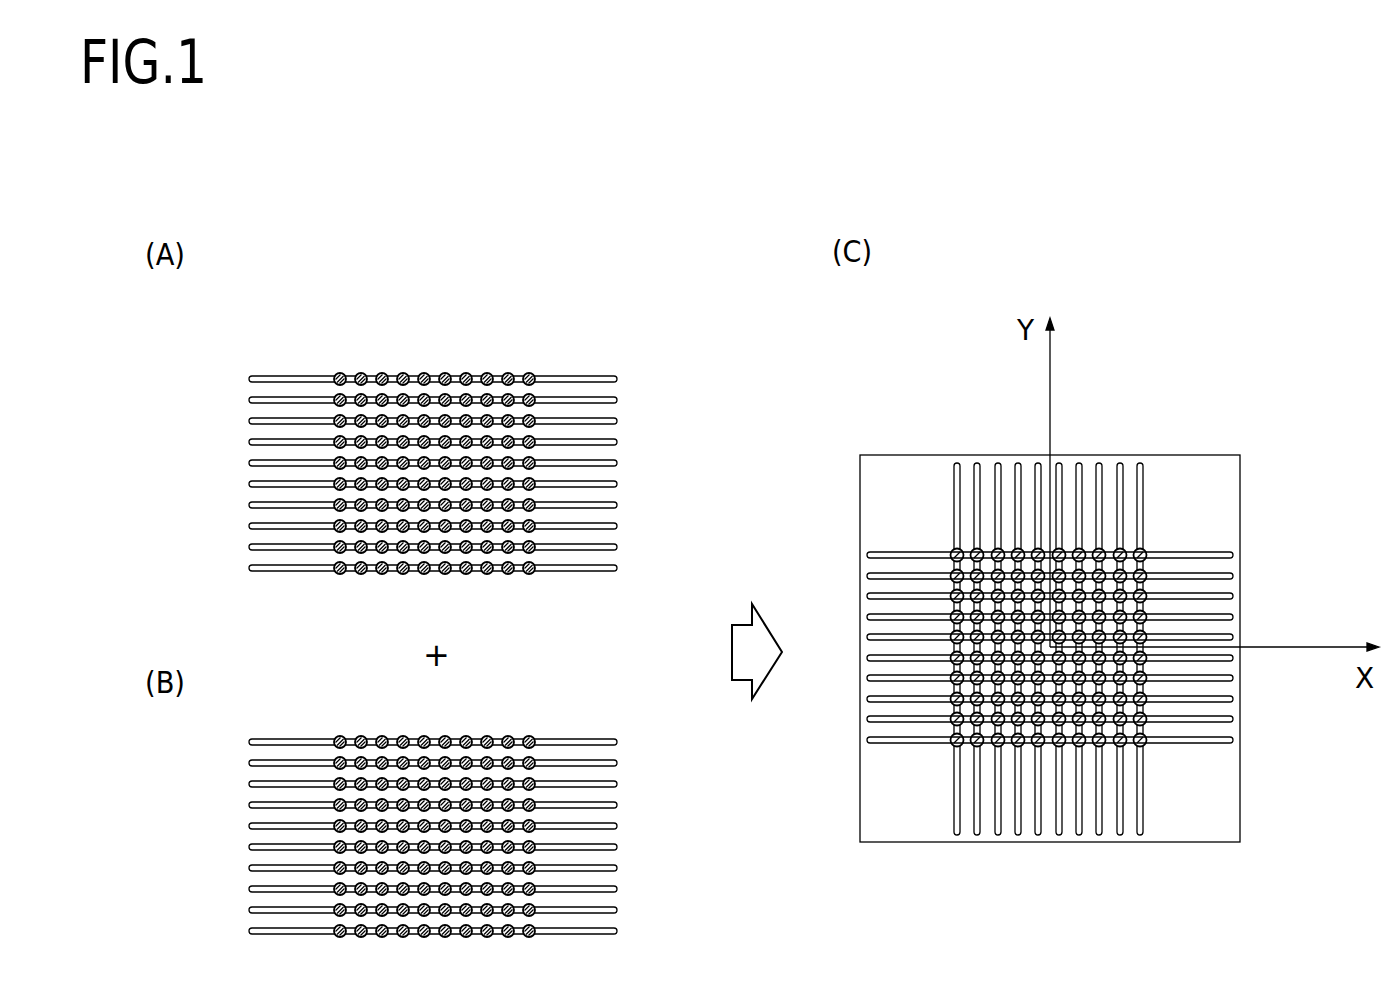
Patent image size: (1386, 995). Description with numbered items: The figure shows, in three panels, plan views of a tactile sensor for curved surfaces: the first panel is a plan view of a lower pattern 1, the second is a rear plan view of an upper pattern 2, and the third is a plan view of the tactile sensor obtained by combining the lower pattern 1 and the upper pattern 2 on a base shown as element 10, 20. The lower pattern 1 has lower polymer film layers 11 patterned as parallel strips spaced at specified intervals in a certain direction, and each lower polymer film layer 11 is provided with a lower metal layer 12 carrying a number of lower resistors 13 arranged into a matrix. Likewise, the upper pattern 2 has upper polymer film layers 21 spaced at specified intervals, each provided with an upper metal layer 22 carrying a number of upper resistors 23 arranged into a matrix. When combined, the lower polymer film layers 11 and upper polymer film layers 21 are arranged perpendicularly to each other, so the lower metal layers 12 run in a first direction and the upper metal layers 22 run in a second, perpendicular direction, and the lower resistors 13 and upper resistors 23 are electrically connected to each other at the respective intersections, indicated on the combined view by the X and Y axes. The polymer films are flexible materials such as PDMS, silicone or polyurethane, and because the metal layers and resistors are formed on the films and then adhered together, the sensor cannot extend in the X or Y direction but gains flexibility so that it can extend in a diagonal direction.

The lower pattern 1 is at (797, 541).
The upper pattern 2 is at (749, 744).
The first base 10 is at (1050, 690).
The second base 20 is at (920, 843).
The lower polymer film layers 11 is at (717, 569).
The lower metal layers 12 is at (594, 376).
The lower resistors 13 is at (505, 373).
The upper polymer film layers 21 is at (807, 743).
The upper metal layers 22 is at (597, 738).
The upper resistors 23 is at (508, 736).